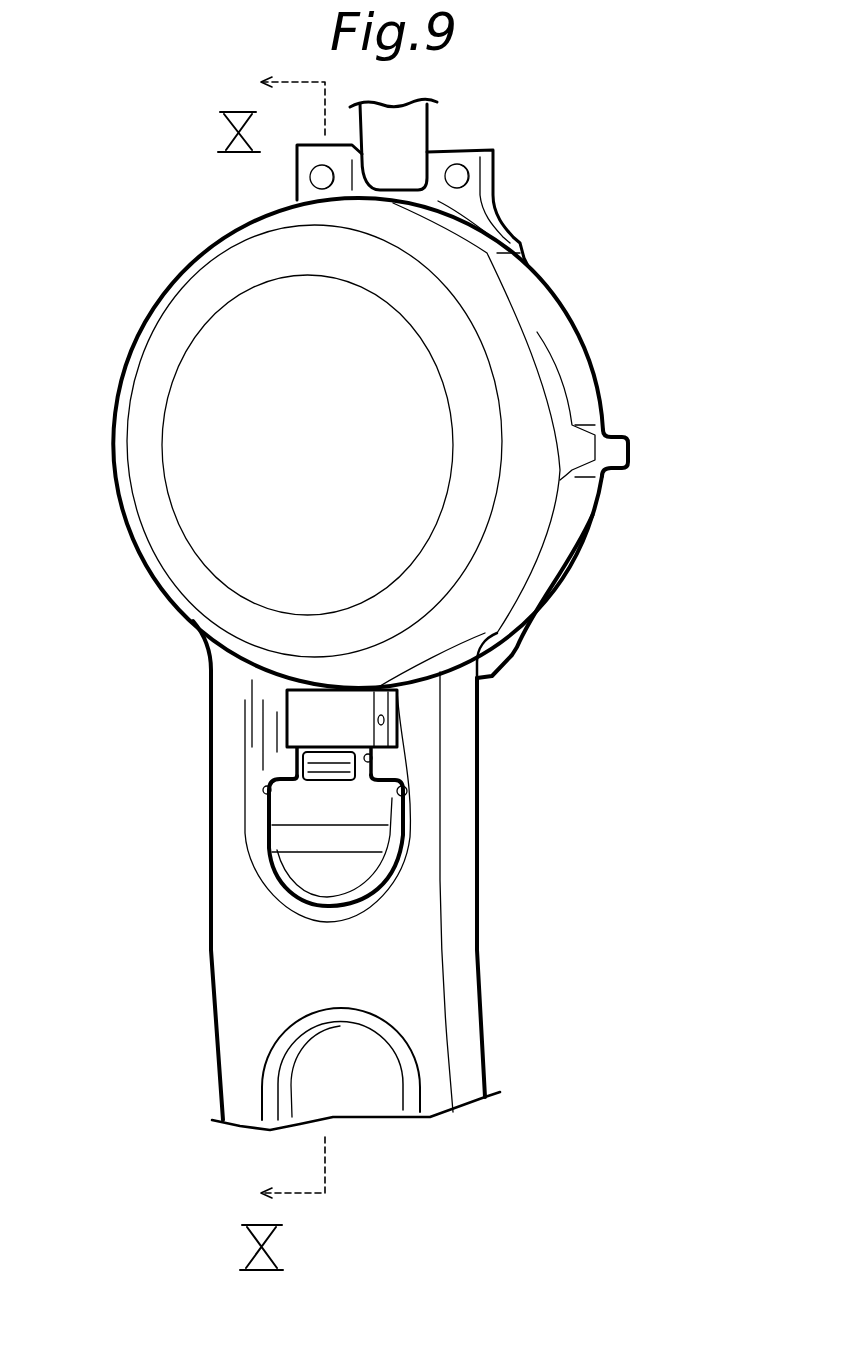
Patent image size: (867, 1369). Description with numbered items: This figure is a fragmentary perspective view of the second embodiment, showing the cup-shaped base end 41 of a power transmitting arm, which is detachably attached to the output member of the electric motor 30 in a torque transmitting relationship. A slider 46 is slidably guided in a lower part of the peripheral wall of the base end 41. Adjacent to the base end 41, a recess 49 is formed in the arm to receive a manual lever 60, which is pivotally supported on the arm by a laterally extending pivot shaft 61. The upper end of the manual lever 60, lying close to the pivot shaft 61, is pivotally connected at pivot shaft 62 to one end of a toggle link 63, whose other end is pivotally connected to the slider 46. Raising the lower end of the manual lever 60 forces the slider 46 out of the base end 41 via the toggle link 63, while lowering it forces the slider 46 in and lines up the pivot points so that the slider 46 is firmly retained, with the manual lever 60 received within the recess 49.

The electric motor 30 is at (612, 382).
The base end 41 is at (477, 367).
The slider 46 is at (298, 696).
The recess 49 is at (397, 866).
The manual lever 60 is at (285, 806).
The pivot shaft 61 is at (406, 791).
The pivot shaft 62 is at (372, 760).
The toggle link 63 is at (297, 755).